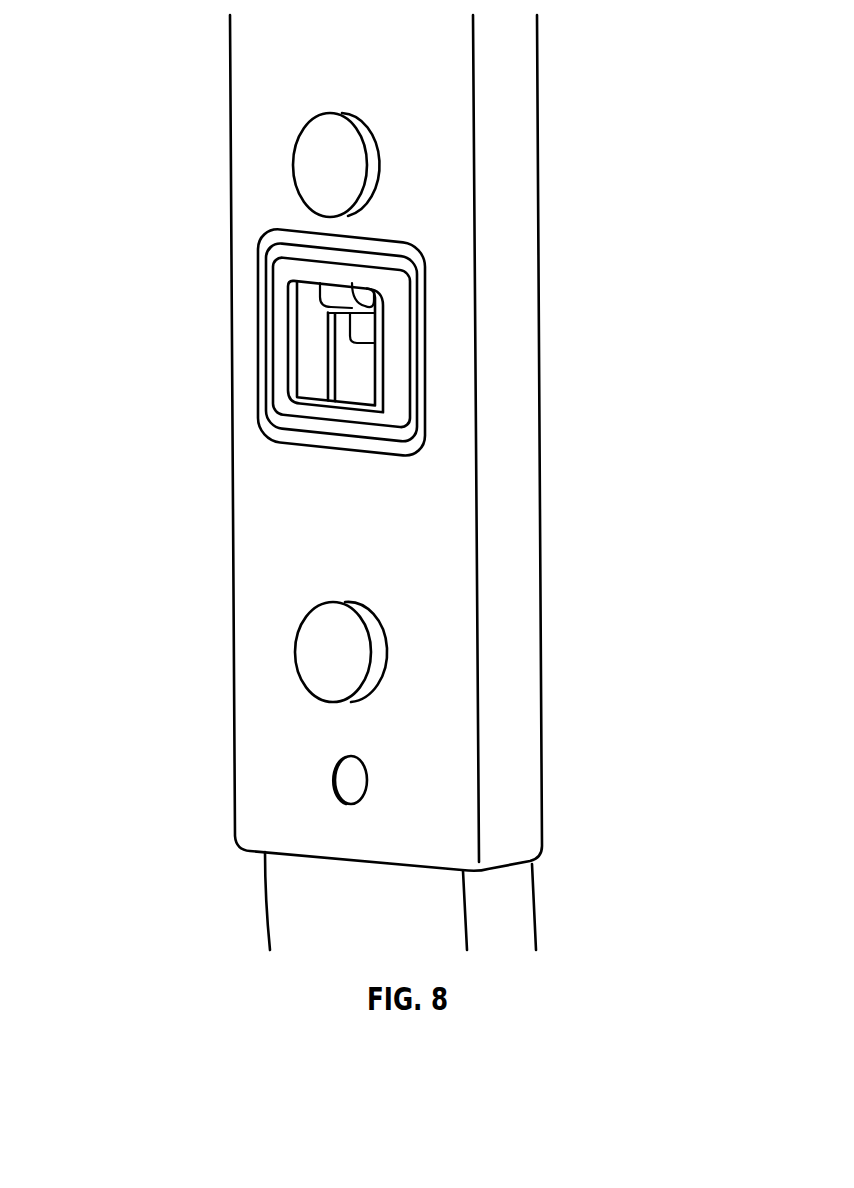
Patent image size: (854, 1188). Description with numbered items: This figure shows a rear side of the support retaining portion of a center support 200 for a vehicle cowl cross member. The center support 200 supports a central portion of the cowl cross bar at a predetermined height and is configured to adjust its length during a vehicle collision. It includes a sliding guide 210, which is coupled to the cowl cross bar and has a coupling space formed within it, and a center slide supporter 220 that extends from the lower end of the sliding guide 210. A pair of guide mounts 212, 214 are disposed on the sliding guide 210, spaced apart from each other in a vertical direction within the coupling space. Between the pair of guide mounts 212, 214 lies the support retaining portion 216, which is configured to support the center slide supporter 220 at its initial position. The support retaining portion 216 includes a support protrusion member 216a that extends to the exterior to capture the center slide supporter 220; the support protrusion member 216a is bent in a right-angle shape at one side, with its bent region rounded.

The center support 200 is at (583, 427).
The sliding guide 210 is at (285, 747).
The guide mount 212 is at (315, 168).
The guide mount 214 is at (319, 652).
The support retaining portion 216 is at (280, 375).
The support protrusion member 216a is at (360, 328).
The center slide supporter 220 is at (513, 913).